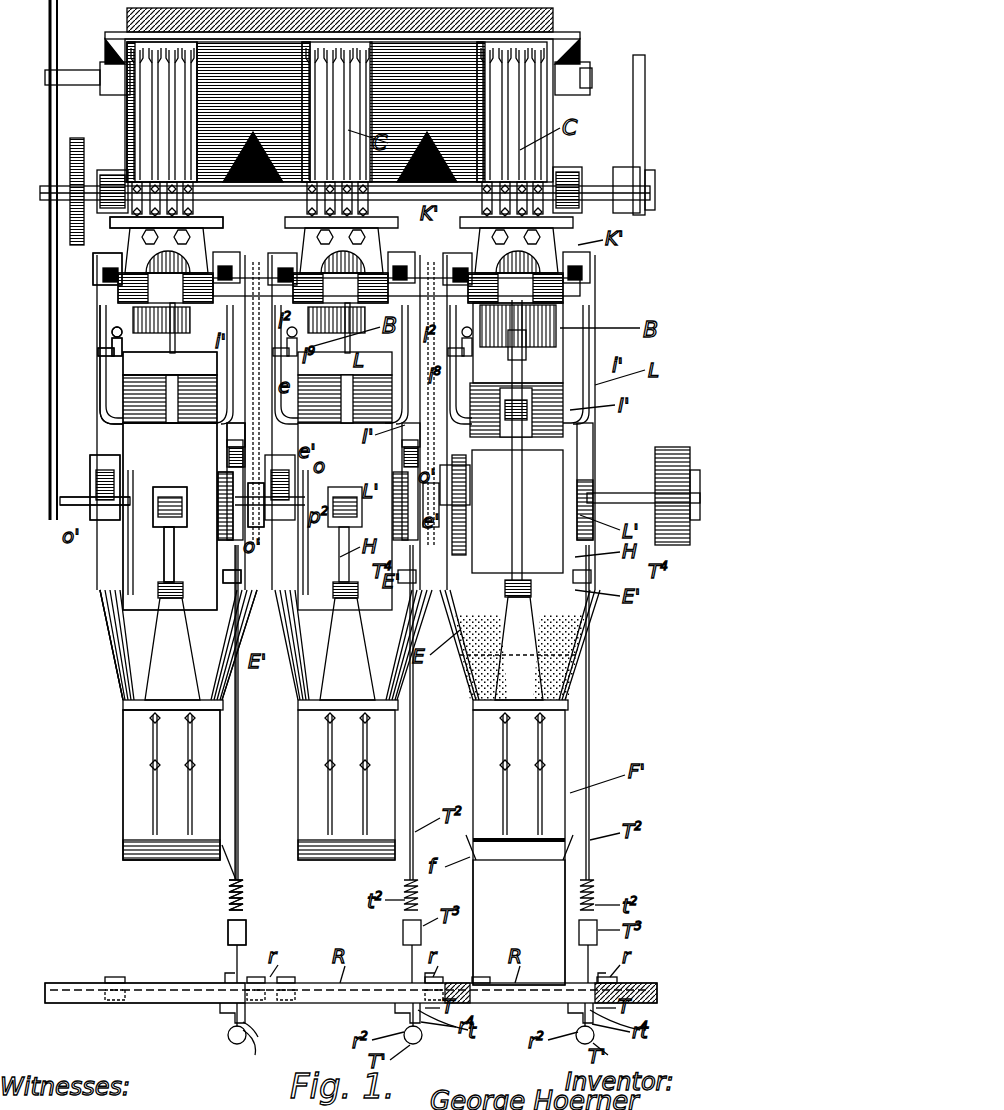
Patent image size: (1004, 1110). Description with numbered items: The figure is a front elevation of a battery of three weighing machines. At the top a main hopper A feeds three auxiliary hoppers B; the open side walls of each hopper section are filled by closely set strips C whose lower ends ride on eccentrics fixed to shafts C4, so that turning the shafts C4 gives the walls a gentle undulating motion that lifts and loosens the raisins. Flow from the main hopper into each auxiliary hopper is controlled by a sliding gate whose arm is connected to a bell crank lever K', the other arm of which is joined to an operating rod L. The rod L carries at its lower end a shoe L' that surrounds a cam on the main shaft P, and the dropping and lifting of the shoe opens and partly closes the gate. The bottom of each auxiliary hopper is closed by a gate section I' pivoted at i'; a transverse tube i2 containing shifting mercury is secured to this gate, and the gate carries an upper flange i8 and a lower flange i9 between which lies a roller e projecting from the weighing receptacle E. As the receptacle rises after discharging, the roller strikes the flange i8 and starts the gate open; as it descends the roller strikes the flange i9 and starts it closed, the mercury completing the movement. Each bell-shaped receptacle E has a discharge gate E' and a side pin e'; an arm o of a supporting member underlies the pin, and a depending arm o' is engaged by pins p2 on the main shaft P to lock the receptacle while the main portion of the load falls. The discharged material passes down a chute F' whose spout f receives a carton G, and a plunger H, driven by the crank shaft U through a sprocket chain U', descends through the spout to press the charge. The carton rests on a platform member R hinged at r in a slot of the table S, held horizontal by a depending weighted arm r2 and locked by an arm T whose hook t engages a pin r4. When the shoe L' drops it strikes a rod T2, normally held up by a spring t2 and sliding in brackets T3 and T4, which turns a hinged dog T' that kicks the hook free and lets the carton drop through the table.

The hopper A is at (560, 36).
The strips C is at (160, 133).
The shaft C4 is at (602, 185).
The bell crank lever K' is at (188, 215).
The crank shaft U is at (396, 269).
The auxiliary hopper B is at (103, 316).
The tube i2 is at (112, 335).
The upper flange i8 is at (100, 352).
The lower flange i9 is at (170, 362).
The pivot i' is at (95, 365).
The roller e is at (75, 364).
The gate section I' is at (116, 399).
The operating rod L is at (170, 471).
The pin e' is at (94, 474).
The sprocket chain U' is at (216, 445).
The arm o is at (143, 490).
The depending arm o' is at (127, 506).
The pin p2 is at (108, 510).
The shoe L' is at (188, 553).
The plunger H is at (163, 560).
The discharge gate E' is at (82, 637).
The weighing receptacle E is at (154, 645).
The bracket T4 is at (219, 576).
The main shaft P is at (606, 490).
The chute F' is at (194, 785).
The rod T2 is at (240, 840).
The spout f is at (243, 848).
The carton G is at (570, 905).
The spring t2 is at (228, 900).
The bracket T3 is at (248, 926).
The table S is at (53, 985).
The platform member R is at (160, 983).
The hinge r is at (112, 977).
The arm T is at (248, 1008).
The hook t is at (233, 1022).
The pin r4 is at (258, 1024).
The weighted arm r2 is at (228, 1037).
The hinged dog T' is at (244, 1051).